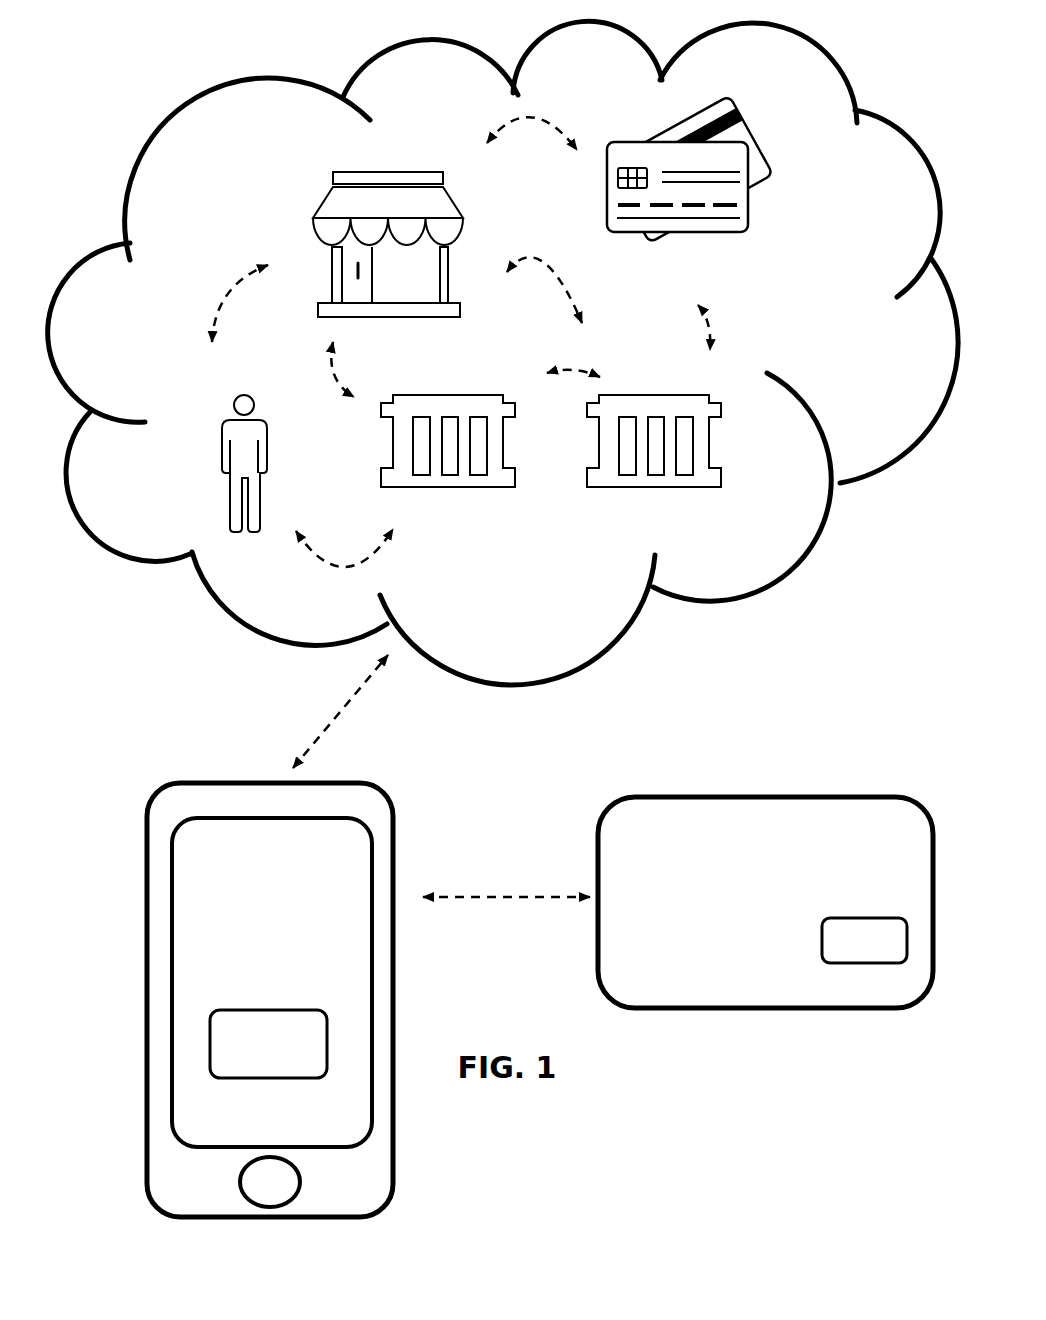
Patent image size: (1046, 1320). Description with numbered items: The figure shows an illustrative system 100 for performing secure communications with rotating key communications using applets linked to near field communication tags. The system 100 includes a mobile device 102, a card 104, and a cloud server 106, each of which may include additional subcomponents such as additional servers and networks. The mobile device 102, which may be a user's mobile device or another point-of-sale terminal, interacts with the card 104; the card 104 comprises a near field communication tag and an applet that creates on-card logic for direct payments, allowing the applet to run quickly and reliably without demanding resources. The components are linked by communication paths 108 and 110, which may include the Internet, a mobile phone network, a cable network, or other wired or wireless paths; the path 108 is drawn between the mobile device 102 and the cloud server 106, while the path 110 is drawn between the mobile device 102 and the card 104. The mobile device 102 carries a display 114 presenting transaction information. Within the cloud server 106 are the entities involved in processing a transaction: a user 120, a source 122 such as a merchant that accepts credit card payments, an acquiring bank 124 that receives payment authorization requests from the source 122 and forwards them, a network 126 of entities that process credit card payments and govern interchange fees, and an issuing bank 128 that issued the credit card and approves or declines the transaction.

The system 100 is at (490, 22).
The mobile device 102 is at (225, 960).
The card 104 is at (765, 778).
The cloud server 106 is at (572, 628).
The communication path 108 is at (325, 722).
The communication path 110 is at (470, 878).
The display of mobile device 114 is at (187, 888).
The user 120 is at (173, 382).
The source 122 is at (287, 205).
The acquiring bank 124 is at (468, 513).
The network 126 is at (782, 250).
The issuing bank 128 is at (662, 503).